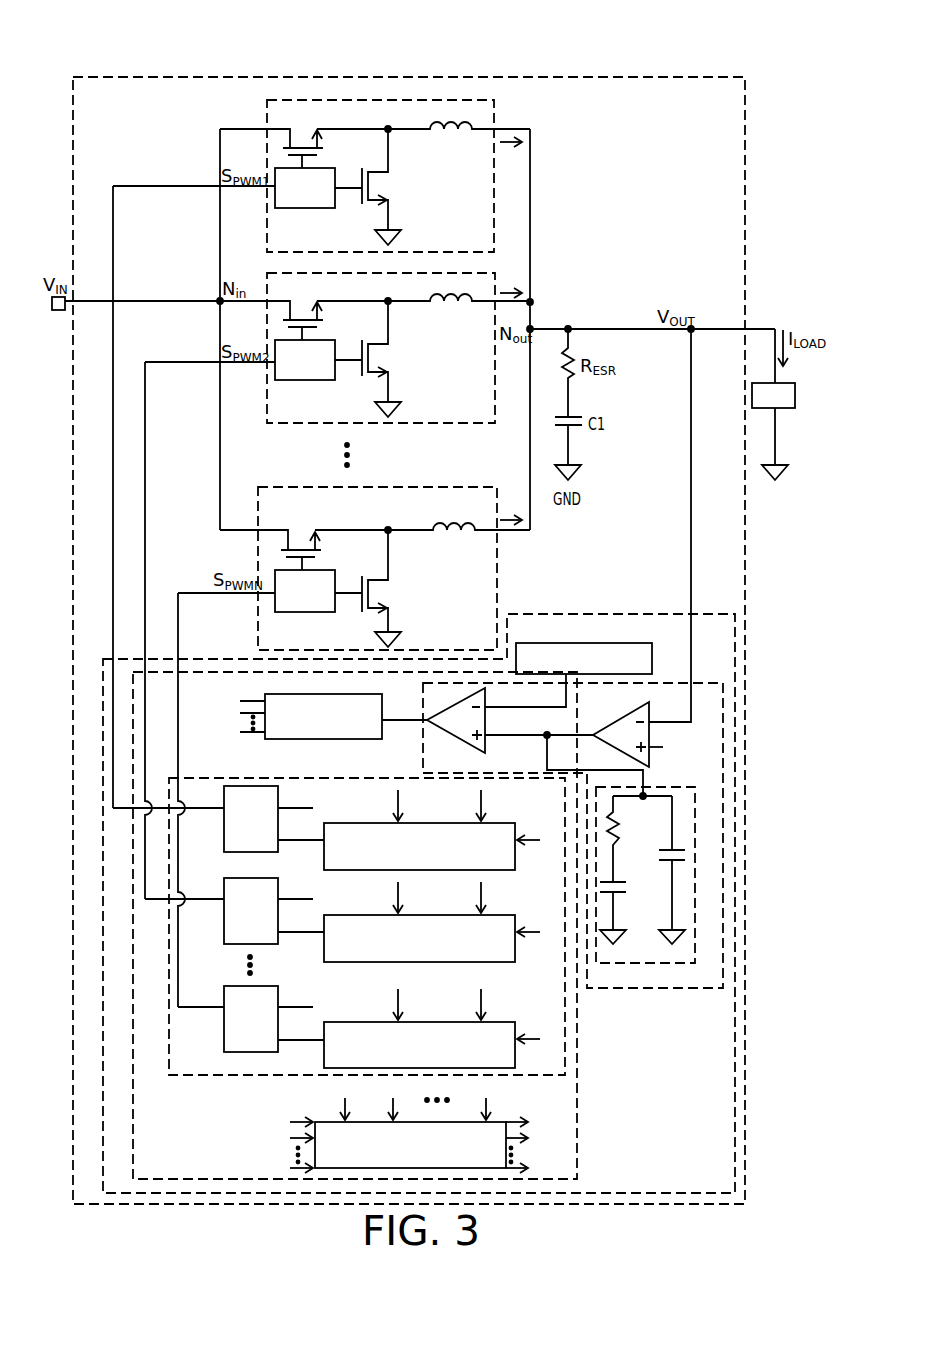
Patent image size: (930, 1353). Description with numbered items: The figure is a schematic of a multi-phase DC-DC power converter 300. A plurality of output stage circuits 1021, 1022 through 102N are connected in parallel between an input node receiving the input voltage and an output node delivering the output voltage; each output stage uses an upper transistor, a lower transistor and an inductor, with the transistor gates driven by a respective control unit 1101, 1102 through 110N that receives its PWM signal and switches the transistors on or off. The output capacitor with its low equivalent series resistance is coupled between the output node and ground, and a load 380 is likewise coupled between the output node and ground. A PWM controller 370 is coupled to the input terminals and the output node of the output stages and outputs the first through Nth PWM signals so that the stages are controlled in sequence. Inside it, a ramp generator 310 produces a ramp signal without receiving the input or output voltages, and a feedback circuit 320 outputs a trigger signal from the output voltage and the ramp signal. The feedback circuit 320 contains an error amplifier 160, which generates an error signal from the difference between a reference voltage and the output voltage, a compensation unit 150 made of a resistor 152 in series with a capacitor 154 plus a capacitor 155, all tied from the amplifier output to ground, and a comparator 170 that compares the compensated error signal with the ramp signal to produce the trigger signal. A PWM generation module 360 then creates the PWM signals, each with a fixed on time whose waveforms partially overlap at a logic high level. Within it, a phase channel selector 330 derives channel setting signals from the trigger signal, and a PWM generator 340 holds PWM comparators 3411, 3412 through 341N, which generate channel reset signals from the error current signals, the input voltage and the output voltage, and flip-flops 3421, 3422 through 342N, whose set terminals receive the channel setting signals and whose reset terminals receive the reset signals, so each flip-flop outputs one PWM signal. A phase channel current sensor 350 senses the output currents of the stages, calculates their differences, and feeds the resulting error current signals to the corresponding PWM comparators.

The multi-phase DC-DC power converter 300 is at (748, 122).
The output stage circuit 1021 is at (396, 174).
The output stage circuit 1022 is at (375, 374).
The output stage circuit 102N is at (396, 568).
The control unit 1101 is at (305, 200).
The control unit 1102 is at (305, 372).
The control unit 110N is at (305, 602).
The load 380 is at (795, 410).
The PWM controller 370 is at (643, 612).
The ramp generator 310 is at (548, 643).
The feedback circuit 320 is at (704, 681).
The error amplifier 160 is at (622, 718).
The comparator 170 is at (487, 742).
The compensation unit 150 is at (659, 875).
The resistor 152 is at (629, 839).
The capacitor 154 is at (629, 911).
The capacitor 155 is at (686, 857).
The PWM generation module 360 is at (577, 1098).
The phase channel selector 330 is at (325, 694).
The PWM generator 340 is at (567, 1003).
The flip-flop 3421 is at (262, 786).
The flip-flop 3422 is at (250, 878).
The flip-flop 342N is at (253, 986).
The PWM comparator 3411 is at (497, 823).
The PWM comparator 3412 is at (497, 915).
The PWM comparator 341N is at (497, 1022).
The phase channel current sensor 350 is at (506, 1122).